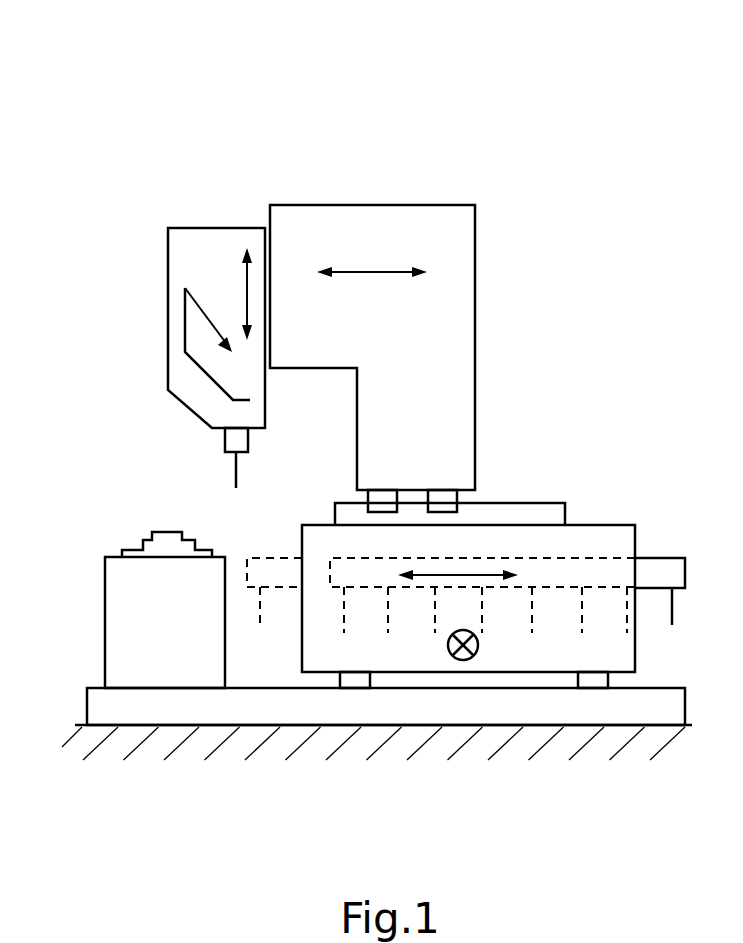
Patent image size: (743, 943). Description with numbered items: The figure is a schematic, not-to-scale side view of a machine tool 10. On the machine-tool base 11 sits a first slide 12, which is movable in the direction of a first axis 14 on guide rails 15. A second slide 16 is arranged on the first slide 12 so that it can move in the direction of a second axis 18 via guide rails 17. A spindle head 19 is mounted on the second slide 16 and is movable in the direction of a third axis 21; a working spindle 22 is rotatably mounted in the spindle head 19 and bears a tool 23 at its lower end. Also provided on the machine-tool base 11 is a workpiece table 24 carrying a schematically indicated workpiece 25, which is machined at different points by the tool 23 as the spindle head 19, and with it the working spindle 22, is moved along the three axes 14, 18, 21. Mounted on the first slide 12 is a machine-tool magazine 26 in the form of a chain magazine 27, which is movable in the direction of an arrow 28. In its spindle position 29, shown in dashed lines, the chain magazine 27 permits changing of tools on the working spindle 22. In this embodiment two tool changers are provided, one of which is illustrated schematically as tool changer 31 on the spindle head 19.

The machine tool 10 is at (512, 170).
The machine-tool base 11 is at (330, 700).
The first slide 12 is at (557, 650).
The first axis 14 is at (447, 650).
The guide rails 15 is at (592, 678).
The second slide 16 is at (440, 350).
The guide rails 17 is at (480, 515).
The second axis 18 is at (360, 272).
The spindle head 19 is at (192, 250).
The third axis 21 is at (240, 285).
The working spindle 22 is at (233, 435).
The tool 23 is at (233, 470).
The workpiece table 24 is at (168, 660).
The workpiece 25 is at (160, 530).
The machine-tool magazine 26 is at (592, 540).
The chain magazine 27 is at (600, 577).
The arrow 28 is at (467, 575).
The spindle position 29 is at (267, 552).
The tool changer 31 is at (187, 323).